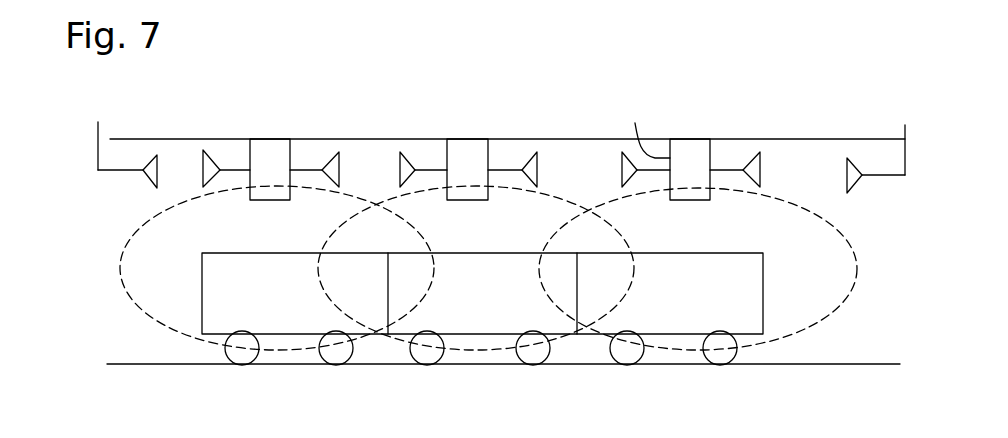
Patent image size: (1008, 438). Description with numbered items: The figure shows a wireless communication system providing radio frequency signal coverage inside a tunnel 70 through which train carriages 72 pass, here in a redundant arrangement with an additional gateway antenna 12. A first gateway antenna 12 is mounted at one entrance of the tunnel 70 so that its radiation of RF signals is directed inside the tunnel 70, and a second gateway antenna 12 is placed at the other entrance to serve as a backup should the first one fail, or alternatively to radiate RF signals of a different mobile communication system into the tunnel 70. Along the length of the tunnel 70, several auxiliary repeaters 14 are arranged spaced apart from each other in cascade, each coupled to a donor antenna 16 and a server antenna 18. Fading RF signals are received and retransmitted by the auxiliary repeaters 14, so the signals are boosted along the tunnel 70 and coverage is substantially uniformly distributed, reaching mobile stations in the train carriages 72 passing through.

The tunnel 70 is at (123, 218).
The gateway antenna 12 is at (147, 167).
The auxiliary repeater 14 is at (250, 157).
The donor antenna 16 is at (308, 168).
The server antenna 18 is at (425, 168).
The train carriage 72 is at (282, 336).